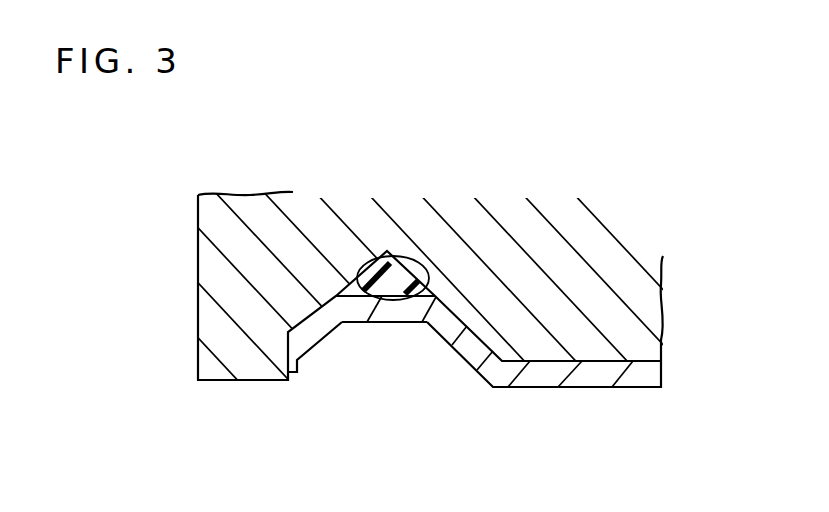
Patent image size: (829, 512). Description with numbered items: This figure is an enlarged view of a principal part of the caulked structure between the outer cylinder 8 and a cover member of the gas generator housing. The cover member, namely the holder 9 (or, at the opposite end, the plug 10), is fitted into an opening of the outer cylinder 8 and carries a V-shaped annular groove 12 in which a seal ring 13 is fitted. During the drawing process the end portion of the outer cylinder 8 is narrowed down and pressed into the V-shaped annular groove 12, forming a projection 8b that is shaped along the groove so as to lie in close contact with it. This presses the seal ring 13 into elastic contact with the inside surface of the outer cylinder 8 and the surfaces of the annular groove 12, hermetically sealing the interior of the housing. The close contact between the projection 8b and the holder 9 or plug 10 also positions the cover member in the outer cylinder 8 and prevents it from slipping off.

The holder 9 is at (230, 330).
The plug 10 is at (425, 256).
The outer cylinder 8 is at (575, 376).
The projection 8b is at (408, 313).
The V-shaped annular groove 12 is at (373, 296).
The seal ring 13 is at (410, 270).